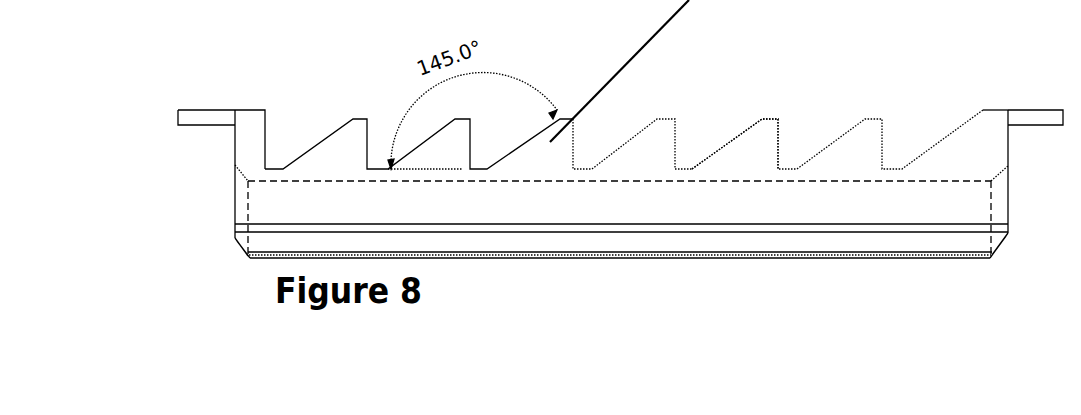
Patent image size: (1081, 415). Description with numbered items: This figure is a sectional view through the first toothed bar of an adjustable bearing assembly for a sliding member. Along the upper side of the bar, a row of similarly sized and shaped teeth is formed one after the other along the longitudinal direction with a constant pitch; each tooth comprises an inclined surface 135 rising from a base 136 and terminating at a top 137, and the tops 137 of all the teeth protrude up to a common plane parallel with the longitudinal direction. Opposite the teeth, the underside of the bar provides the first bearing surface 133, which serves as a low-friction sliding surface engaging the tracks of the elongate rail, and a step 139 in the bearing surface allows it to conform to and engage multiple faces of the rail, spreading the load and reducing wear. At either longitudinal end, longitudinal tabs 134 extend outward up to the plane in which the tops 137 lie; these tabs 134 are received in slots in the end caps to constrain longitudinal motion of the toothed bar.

The first bearing surface 133 is at (903, 252).
The longitudinal tabs 134 is at (204, 113).
The inclined surface 135 is at (628, 142).
The base 136 is at (683, 170).
The top 137 is at (770, 122).
The step 139 is at (238, 247).